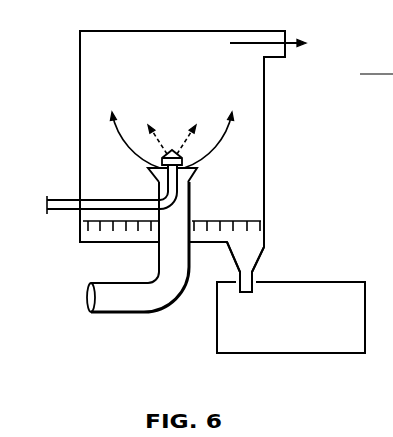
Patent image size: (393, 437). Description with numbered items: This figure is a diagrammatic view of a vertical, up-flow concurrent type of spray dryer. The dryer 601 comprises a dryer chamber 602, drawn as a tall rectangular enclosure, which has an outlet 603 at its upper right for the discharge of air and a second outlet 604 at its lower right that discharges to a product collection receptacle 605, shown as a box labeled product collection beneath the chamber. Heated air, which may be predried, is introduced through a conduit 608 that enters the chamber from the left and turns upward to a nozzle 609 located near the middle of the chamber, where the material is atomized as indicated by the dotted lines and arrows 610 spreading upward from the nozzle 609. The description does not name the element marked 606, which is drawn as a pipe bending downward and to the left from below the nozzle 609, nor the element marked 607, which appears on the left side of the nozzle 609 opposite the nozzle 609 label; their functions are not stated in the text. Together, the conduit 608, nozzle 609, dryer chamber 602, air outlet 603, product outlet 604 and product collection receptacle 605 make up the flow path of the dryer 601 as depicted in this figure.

The dryer 601 is at (272, 132).
The dryer chamber 602 is at (80, 109).
The outlet 603 is at (266, 56).
The outlet 604 is at (258, 257).
The product collection receptacle 605 is at (288, 353).
The outlet pipe 606 is at (114, 310).
The left deflector / spray path 607 is at (148, 162).
The conduit 608 is at (70, 200).
The nozzle 609 is at (194, 162).
The dotted lines and arrows 610 is at (194, 126).